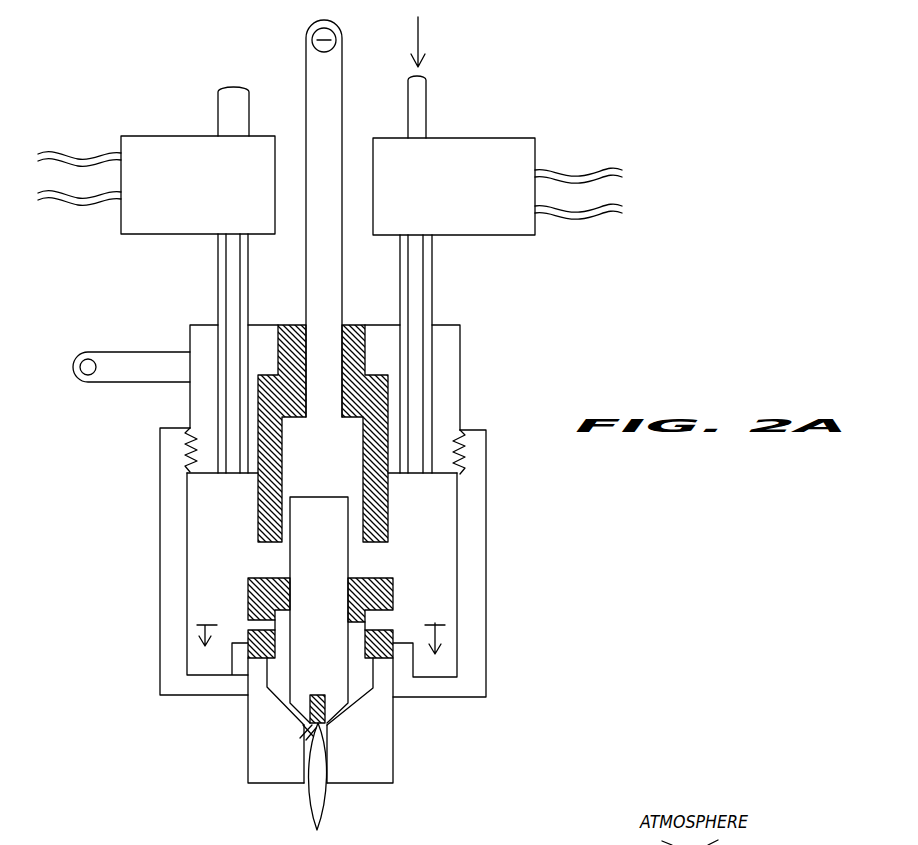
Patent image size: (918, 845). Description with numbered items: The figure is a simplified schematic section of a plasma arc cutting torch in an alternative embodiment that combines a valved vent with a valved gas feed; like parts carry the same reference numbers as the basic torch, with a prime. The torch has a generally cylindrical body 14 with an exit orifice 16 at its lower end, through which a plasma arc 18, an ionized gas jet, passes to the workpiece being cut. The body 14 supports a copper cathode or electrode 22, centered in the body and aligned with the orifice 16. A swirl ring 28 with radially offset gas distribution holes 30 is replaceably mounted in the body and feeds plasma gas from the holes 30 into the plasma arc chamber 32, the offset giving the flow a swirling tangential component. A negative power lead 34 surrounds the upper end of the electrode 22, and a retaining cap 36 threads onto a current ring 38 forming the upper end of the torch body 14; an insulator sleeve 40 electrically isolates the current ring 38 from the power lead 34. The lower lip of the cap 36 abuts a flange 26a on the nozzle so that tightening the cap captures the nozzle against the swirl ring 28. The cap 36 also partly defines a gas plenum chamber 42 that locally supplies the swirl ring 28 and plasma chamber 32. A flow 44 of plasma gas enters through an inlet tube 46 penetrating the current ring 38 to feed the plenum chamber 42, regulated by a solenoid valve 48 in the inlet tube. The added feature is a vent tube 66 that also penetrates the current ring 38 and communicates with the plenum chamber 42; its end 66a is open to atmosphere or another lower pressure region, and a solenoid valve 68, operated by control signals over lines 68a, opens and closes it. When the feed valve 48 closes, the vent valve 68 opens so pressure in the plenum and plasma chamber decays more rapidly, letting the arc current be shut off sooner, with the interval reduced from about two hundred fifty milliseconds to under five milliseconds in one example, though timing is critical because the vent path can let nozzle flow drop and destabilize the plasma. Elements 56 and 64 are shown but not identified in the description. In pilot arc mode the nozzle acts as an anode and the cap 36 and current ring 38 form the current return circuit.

The torch body 14 is at (481, 353).
The exit orifice 16 is at (328, 785).
The plasma arc 18 is at (312, 800).
The electrode 22 is at (352, 556).
The flange 26a is at (247, 643).
The swirl ring 28 is at (248, 580).
The gas distribution holes 30 is at (395, 622).
The plasma arc chamber 32 is at (278, 690).
The negative power lead 34 is at (343, 56).
The retaining cap 36 is at (487, 517).
The current ring 38 is at (197, 325).
The insulator sleeve 40 is at (293, 327).
The gas plenum chamber 42 is at (448, 543).
The flow of plasma gas 44 is at (420, 32).
The inlet tube 46 is at (417, 303).
The solenoid valve 48 is at (477, 138).
The valve seat 56 is at (302, 727).
The seat insert 64 is at (345, 712).
The vent tube 66 is at (230, 267).
The vent tube end 66a is at (249, 62).
The vent solenoid valve 68 is at (172, 136).
The control lines 68a is at (97, 150).